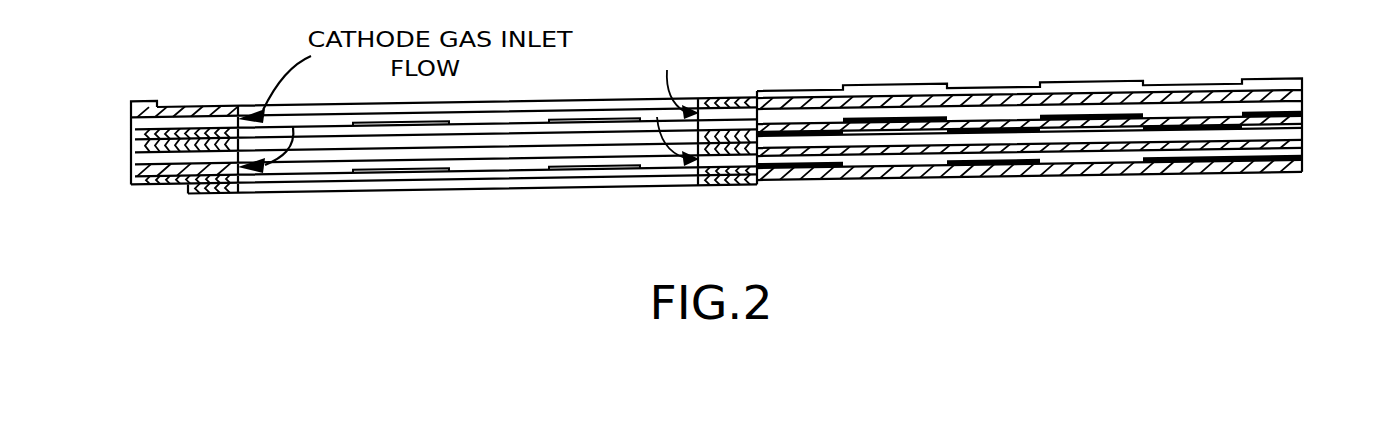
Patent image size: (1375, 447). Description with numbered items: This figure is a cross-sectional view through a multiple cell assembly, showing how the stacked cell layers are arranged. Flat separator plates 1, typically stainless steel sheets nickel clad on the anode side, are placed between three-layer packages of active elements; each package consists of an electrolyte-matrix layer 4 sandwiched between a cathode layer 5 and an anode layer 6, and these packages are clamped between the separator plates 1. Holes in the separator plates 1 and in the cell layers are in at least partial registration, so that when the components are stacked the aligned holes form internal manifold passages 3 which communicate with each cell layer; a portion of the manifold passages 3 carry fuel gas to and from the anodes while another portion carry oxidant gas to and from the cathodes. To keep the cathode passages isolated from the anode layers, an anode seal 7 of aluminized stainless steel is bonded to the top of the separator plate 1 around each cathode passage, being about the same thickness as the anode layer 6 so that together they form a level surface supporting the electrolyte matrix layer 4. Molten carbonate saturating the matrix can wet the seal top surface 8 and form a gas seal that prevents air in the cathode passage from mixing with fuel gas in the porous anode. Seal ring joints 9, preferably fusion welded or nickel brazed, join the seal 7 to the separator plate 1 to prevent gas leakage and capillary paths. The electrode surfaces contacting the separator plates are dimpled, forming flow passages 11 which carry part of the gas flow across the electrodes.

The separator plate 1 is at (1310, 165).
The manifold passage 3 is at (527, 188).
The electrolyte-matrix layer 4 is at (1311, 140).
The cathode layer 5 is at (1308, 149).
The anode layer 6 is at (1318, 125).
The anode seal 7 is at (745, 128).
The seal top surface 8 is at (680, 106).
The seal ring joint 9 is at (757, 138).
The flow passage 11 is at (207, 196).